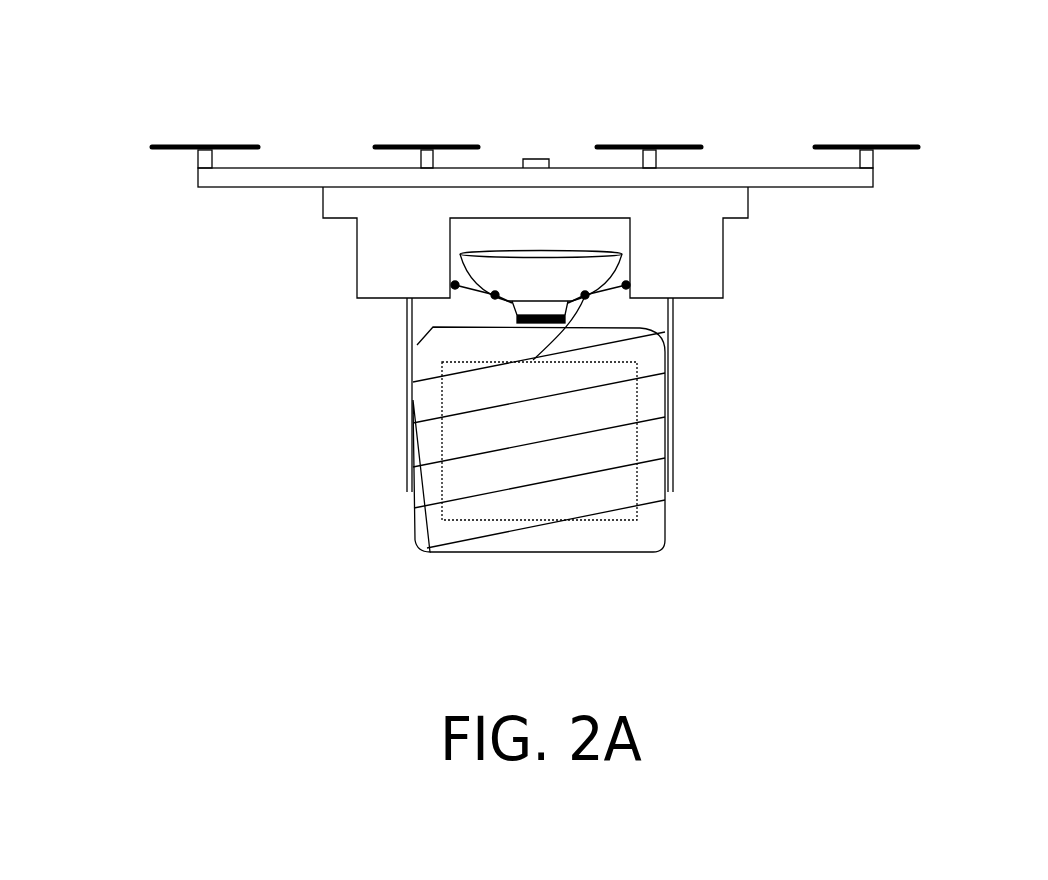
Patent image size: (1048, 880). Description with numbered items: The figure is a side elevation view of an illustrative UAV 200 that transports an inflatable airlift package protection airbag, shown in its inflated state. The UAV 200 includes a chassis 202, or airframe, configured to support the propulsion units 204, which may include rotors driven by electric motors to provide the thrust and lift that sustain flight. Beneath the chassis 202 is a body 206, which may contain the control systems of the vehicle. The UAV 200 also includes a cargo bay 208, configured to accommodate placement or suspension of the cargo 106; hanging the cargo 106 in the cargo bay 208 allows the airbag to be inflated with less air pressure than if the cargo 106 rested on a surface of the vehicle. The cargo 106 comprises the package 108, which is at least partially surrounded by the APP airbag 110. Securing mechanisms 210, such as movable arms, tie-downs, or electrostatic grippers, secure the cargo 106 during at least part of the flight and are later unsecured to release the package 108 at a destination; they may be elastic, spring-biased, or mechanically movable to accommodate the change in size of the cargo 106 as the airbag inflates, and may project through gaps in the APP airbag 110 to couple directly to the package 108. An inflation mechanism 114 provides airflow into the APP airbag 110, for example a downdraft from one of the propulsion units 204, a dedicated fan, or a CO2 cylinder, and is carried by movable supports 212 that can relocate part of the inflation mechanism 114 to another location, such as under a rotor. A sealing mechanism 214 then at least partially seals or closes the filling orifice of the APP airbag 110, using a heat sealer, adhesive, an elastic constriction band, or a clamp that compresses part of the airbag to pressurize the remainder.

The UAV 200 is at (970, 83).
The chassis 202 is at (270, 187).
The propulsion units 204 is at (173, 162).
The body 206 is at (323, 243).
The inflation mechanism 114 is at (510, 280).
The sealing mechanism 214 is at (542, 308).
The cargo bay 208 is at (652, 312).
The movable supports 212 is at (612, 300).
The securing mechanisms 210 is at (405, 322).
The cargo 106 is at (673, 548).
The package 108 is at (603, 523).
The APP airbag 110 is at (558, 553).